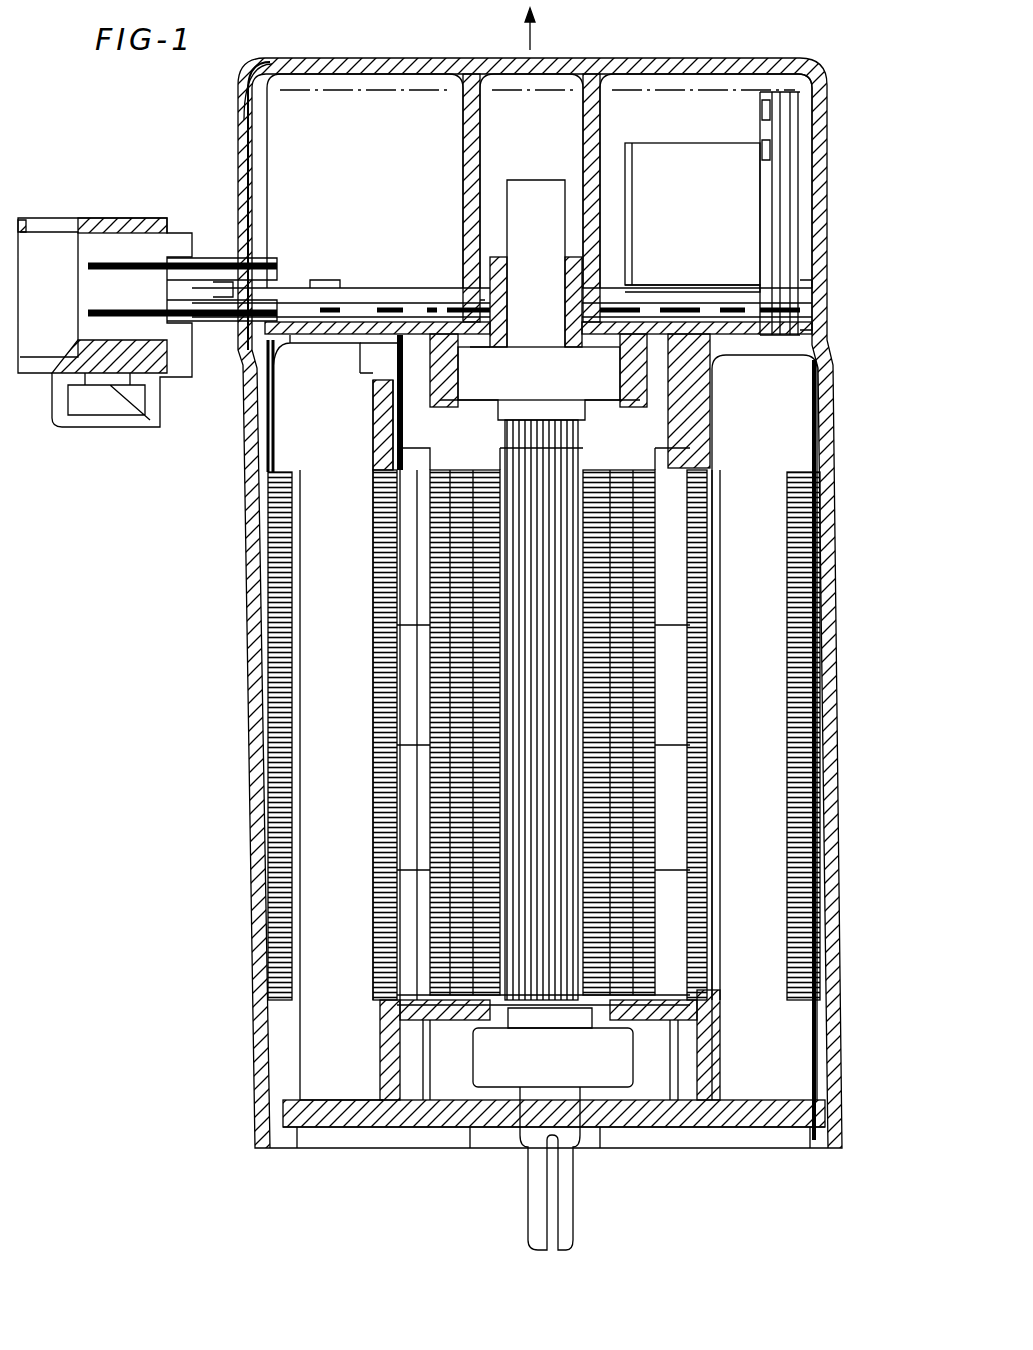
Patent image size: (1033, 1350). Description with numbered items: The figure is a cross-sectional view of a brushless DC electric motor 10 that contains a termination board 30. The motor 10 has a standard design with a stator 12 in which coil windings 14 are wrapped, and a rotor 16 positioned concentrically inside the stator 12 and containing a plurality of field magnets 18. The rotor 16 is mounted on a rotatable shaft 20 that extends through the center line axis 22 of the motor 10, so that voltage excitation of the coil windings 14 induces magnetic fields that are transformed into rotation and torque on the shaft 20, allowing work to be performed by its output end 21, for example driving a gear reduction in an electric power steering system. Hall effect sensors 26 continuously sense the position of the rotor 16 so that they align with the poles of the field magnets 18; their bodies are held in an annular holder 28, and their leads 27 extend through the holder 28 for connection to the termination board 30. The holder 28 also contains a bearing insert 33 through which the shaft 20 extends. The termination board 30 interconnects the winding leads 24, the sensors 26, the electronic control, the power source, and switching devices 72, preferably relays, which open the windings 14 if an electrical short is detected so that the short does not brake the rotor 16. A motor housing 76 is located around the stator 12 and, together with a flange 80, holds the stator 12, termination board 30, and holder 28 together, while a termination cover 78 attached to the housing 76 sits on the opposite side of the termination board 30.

The brushless DC electric motor 10 is at (846, 385).
The stator 12 is at (802, 778).
The coil windings 14 is at (800, 1046).
The rotor 16 is at (688, 560).
The field magnets 18 is at (690, 508).
The rotatable shaft 20 is at (530, 415).
The output end 21 is at (568, 1192).
The center line axis 22 is at (530, 40).
The winding leads 24 is at (790, 325).
The sensors 26 is at (395, 455).
The leads 27 is at (370, 358).
The annular holder 28 is at (420, 345).
The termination board 30 is at (308, 278).
The bearing insert 33 is at (568, 378).
The switching devices 72 is at (685, 160).
The motor housing 76 is at (250, 808).
The termination cover 78 is at (240, 116).
The flange 80 is at (415, 1135).